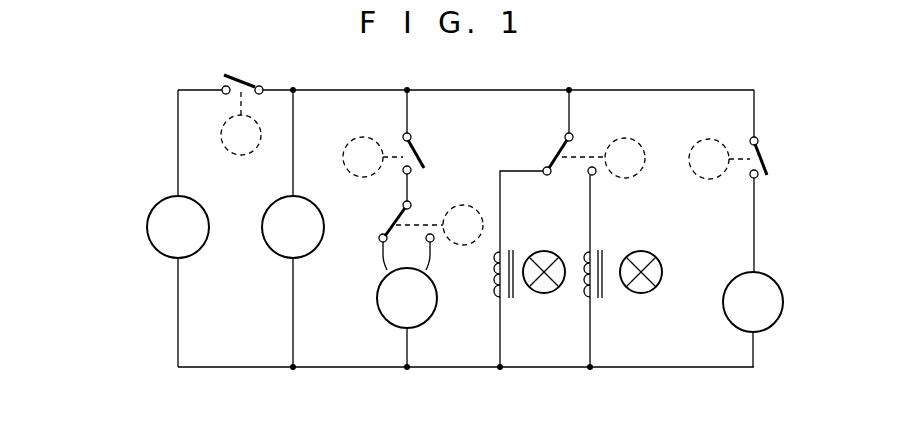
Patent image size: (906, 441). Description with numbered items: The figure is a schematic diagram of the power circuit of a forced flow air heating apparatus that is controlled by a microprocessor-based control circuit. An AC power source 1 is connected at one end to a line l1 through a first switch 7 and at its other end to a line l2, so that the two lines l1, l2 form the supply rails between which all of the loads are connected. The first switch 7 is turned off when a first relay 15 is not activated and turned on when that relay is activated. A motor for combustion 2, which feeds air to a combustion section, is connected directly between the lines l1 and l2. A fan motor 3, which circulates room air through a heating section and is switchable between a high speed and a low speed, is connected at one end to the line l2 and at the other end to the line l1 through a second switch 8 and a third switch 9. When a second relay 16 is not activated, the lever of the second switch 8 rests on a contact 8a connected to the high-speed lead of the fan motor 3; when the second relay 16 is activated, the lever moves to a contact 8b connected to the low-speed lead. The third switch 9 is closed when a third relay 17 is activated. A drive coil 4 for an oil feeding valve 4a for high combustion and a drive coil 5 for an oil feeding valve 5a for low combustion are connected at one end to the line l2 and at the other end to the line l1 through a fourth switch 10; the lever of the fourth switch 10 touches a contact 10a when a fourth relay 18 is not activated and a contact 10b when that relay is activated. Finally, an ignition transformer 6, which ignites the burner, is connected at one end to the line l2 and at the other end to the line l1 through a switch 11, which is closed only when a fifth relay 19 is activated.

The AC power source 1 is at (147, 228).
The motor for combustion 2 is at (262, 228).
The fan motor 3 is at (377, 302).
The drive coil 4 is at (503, 250).
The oil feeding valve for high combustion 4a is at (541, 293).
The drive coil 5 is at (593, 250).
The oil feeding valve for low combustion 5a is at (639, 293).
The ignition transformer 6 is at (782, 310).
The first switch 7 is at (246, 82).
The second switch 8 is at (393, 222).
The contact 8a is at (378, 236).
The contact 8b is at (433, 242).
The third switch 9 is at (420, 157).
The fourth switch 10 is at (557, 153).
The contact 10a is at (545, 176).
The contact 10b is at (594, 175).
The switch 11 is at (763, 161).
The first relay 15 is at (241, 155).
The second relay 16 is at (459, 206).
The third relay 17 is at (354, 138).
The fourth relay 18 is at (621, 138).
The fifth relay 19 is at (703, 140).
The line l1 is at (338, 76).
The line l2 is at (330, 369).